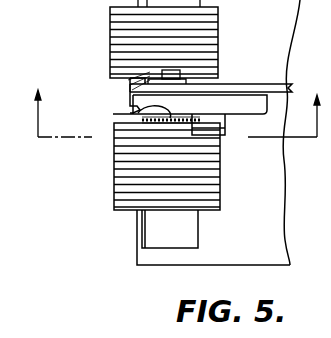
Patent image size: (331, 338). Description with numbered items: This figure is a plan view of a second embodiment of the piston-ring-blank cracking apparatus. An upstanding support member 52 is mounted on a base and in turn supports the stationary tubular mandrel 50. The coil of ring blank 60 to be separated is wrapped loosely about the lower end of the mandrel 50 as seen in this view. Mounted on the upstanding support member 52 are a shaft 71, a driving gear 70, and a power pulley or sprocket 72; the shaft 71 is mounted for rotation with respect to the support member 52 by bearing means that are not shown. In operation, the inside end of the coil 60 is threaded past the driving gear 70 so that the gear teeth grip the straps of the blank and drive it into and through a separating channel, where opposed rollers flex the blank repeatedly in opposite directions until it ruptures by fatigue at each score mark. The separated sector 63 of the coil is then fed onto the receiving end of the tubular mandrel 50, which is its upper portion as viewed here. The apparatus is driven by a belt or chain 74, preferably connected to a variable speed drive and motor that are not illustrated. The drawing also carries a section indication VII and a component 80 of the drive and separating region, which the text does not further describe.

The stationary tubular mandrel 50 is at (190, 236).
The upstanding support member 52 is at (228, 108).
The coil of ring blank 60 is at (120, 176).
The separated sector of the coil 63 is at (118, 37).
The driving gear 70 is at (150, 125).
The shaft 71 is at (130, 112).
The power pulley or sprocket 72 is at (143, 80).
The belt or chain 74 is at (255, 84).
The block 80 is at (225, 116).
The section line VII- VII is at (177, 107).